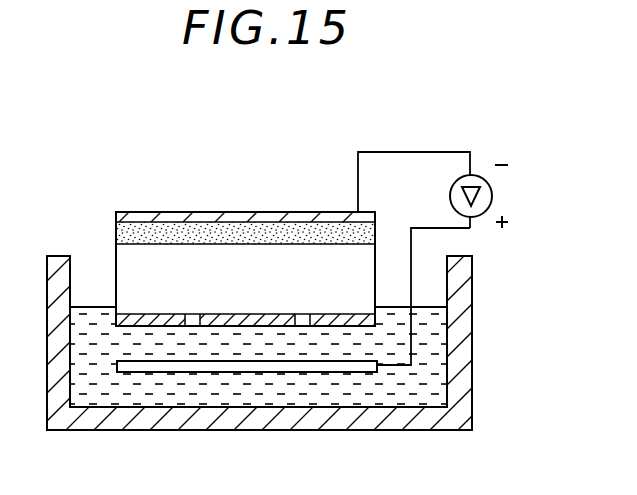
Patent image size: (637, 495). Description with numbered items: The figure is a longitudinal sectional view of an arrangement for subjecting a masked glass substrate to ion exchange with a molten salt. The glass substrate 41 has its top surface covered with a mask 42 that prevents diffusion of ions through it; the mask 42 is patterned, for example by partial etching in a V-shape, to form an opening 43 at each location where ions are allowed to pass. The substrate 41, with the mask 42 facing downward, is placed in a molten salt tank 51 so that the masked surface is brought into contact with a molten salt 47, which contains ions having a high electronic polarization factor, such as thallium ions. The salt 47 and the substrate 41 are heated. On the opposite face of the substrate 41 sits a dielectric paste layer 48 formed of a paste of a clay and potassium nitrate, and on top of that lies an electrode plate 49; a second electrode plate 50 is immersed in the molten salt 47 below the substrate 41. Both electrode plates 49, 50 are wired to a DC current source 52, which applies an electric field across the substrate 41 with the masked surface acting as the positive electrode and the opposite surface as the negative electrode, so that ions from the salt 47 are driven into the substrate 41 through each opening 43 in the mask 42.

The glass substrate 41 is at (125, 259).
The mask 42 is at (132, 317).
The opening 43 is at (190, 314).
The molten salt 47 is at (173, 400).
The dielectric paste layer 48 is at (172, 233).
The electrode plate 49 is at (272, 218).
The electrode plate 50 is at (300, 372).
The molten salt tank 51 is at (462, 343).
The DC current source 52 is at (492, 196).